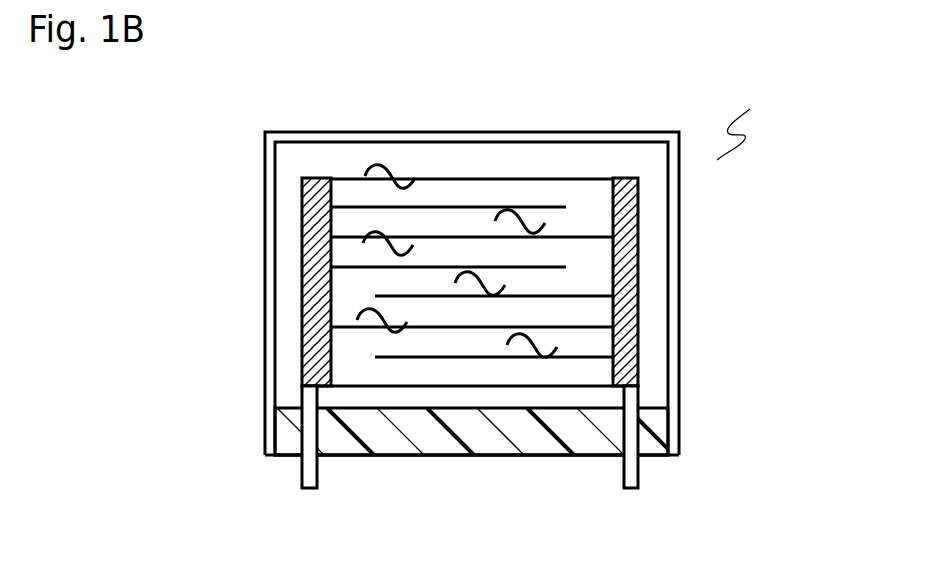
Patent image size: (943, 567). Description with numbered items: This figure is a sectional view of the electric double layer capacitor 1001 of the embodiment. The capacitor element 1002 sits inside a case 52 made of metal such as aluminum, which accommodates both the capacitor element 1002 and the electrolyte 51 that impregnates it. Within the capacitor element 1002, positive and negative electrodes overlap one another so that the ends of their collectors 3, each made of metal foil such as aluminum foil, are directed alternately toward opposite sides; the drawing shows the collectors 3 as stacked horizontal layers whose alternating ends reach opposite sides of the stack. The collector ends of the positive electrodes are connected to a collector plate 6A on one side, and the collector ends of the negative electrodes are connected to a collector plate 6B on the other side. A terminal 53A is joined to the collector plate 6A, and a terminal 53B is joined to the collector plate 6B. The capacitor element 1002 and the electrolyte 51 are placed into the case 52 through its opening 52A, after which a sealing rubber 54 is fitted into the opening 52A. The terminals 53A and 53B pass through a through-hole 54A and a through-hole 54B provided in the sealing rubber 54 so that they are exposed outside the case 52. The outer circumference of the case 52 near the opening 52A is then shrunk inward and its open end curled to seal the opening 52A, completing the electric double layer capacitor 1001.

The case 52 is at (265, 242).
The opening 52A is at (473, 458).
The capacitor element 1002 is at (533, 178).
The electric double layer capacitor 1001 is at (745, 120).
The collector 3 is at (565, 267).
The electrolyte 51 is at (503, 210).
The collector plate 6B is at (303, 336).
The collector plate 6A is at (623, 315).
The sealing rubber 54 is at (653, 425).
The through-hole 54B is at (302, 432).
The through-hole 54A is at (643, 447).
The terminal 53B is at (312, 470).
The terminal 53A is at (633, 473).